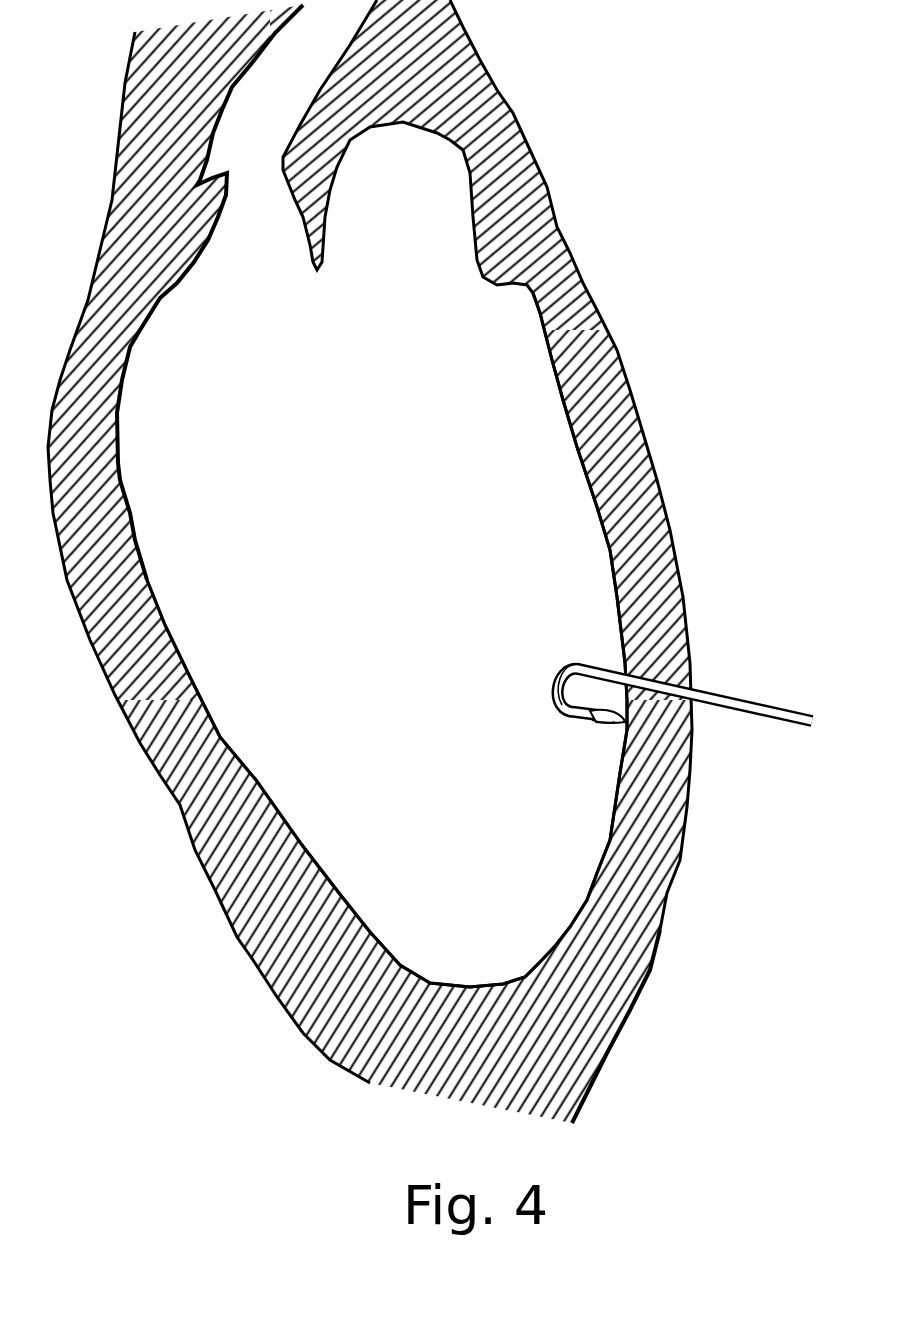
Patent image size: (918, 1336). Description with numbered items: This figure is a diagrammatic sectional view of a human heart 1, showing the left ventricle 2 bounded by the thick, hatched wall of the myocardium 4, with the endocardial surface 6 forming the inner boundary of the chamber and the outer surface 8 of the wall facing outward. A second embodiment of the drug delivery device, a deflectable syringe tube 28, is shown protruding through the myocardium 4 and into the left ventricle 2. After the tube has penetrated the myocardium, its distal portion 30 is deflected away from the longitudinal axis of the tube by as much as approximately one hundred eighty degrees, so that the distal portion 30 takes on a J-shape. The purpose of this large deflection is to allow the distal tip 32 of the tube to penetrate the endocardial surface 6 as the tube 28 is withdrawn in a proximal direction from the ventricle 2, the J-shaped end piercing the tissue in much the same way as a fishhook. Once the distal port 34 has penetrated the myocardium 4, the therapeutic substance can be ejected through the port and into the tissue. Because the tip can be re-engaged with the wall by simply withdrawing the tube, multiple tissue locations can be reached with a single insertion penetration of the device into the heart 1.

The human heart 1 is at (415, 561).
The left ventricle 2 is at (540, 468).
The myocardium 4 is at (643, 865).
The endocardial surface 6 is at (618, 813).
The epicardium (outer surface) 8 is at (665, 500).
The deflectable syringe tube 28 is at (671, 681).
The distal portion 30 is at (568, 666).
The distal tip 32 is at (625, 723).
The distal port 34 is at (600, 720).